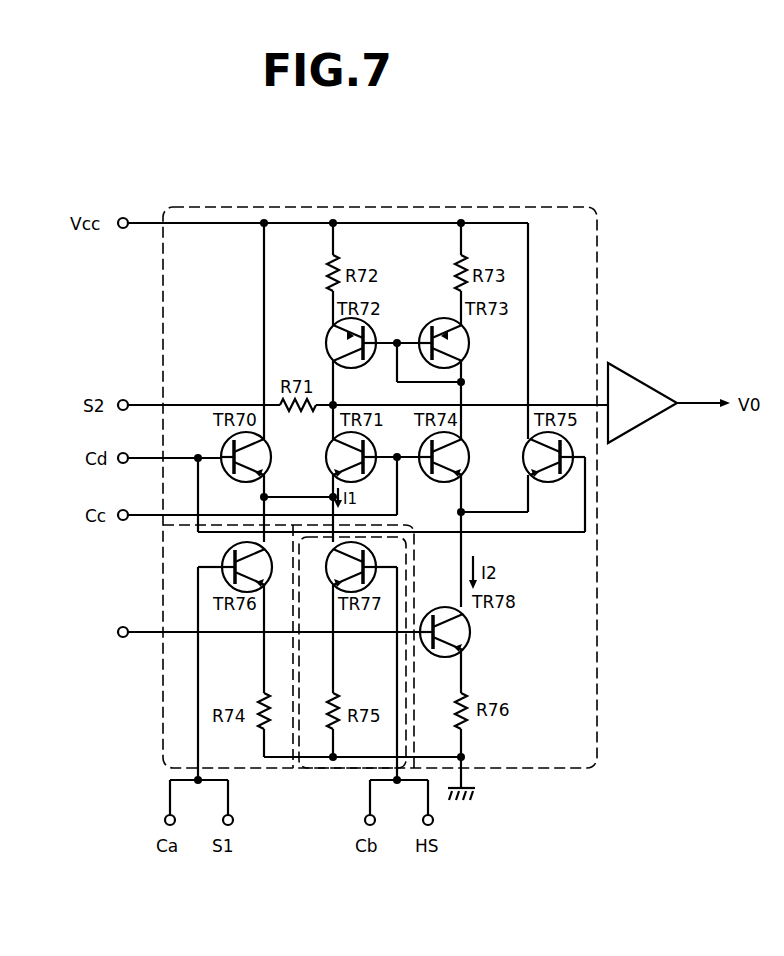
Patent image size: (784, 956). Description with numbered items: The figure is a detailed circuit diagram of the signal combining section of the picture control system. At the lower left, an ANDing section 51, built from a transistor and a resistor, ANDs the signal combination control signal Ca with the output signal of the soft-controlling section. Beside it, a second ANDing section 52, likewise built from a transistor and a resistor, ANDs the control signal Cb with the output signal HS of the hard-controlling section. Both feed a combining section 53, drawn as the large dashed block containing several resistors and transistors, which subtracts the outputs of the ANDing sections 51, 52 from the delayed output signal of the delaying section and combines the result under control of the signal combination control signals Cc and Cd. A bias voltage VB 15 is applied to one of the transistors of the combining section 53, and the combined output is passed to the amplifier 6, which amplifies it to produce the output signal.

The amplifier 6 is at (637, 378).
The bias voltage 15 is at (87, 634).
The ANDing section 51 is at (163, 737).
The ANDing section 52 is at (325, 770).
The combining section 53 is at (597, 568).